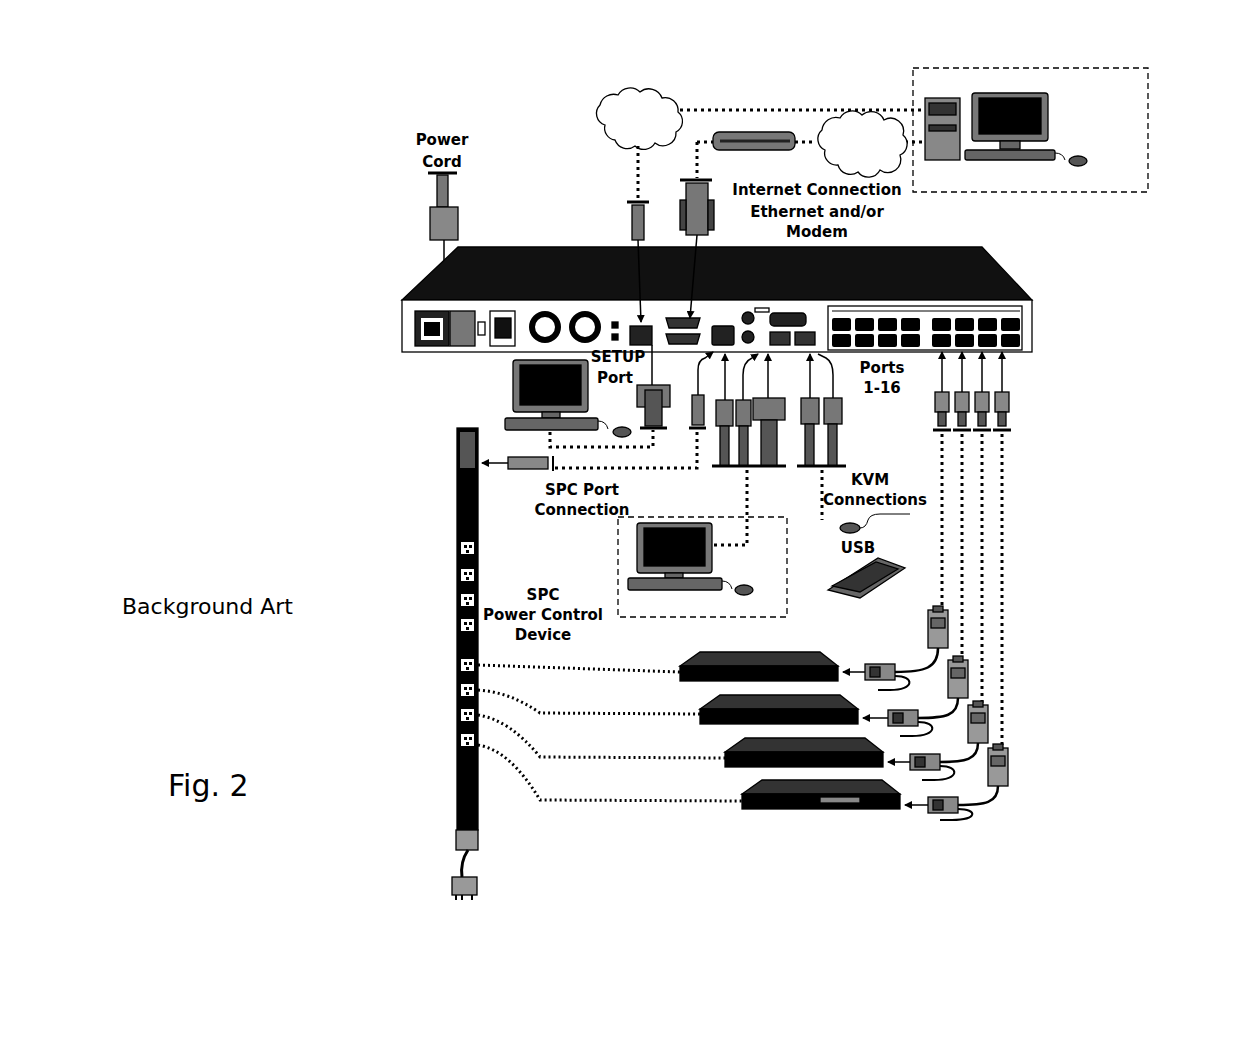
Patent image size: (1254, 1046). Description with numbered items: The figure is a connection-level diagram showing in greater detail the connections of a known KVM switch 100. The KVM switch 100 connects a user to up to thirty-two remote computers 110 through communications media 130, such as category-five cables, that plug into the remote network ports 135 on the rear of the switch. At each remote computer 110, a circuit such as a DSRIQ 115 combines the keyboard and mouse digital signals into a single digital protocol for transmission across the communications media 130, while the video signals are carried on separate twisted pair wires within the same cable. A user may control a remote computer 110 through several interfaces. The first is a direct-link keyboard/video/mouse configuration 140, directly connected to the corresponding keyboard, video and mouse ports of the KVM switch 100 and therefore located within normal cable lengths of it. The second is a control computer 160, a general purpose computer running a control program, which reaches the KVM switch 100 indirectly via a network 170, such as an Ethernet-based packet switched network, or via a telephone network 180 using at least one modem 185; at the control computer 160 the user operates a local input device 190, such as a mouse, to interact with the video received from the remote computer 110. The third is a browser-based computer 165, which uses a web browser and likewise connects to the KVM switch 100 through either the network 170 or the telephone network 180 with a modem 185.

The KVM switch 100 is at (751, 290).
The computer 110 is at (830, 810).
The DSRIQ 115 is at (1010, 757).
The communications medium 130 is at (1012, 497).
The remote network ports 135 is at (1030, 328).
The direct-link keyboard/video/mouse configuration 140 is at (615, 537).
The control computer 160 is at (1079, 130).
The browser-based computer 165 is at (1075, 130).
The network 170 is at (608, 101).
The telephone network 180 is at (866, 110).
The modem 185 is at (755, 130).
The local input device 190 is at (1100, 160).